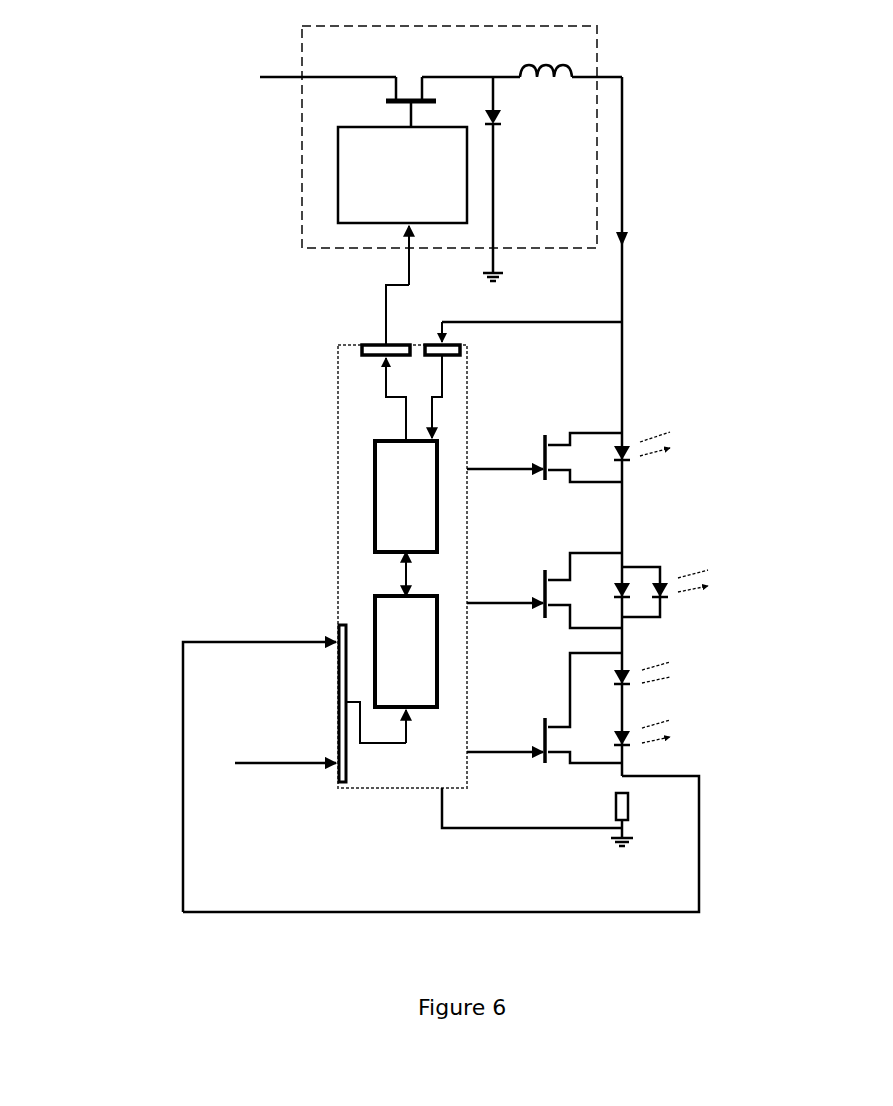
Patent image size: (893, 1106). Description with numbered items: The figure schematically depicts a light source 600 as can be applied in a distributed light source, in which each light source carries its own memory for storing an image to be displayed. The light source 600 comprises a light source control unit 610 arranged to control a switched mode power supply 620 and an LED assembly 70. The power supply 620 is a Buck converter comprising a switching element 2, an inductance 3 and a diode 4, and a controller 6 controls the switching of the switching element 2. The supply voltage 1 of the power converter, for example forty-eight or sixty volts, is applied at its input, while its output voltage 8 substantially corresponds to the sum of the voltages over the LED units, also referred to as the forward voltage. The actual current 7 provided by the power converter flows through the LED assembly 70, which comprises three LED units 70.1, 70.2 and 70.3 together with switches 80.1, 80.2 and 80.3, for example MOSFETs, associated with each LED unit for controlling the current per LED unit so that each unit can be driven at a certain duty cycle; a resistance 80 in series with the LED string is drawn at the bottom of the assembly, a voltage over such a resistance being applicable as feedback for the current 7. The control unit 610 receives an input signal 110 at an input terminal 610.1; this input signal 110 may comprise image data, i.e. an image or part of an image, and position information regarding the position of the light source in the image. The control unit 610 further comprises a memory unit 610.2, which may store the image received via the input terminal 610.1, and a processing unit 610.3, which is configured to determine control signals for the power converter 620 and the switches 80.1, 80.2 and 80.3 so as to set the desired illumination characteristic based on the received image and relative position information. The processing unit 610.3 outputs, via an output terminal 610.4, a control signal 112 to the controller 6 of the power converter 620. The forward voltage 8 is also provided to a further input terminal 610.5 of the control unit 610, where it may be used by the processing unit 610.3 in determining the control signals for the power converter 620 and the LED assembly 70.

The light source 600 is at (99, 23).
The power supply 620 is at (597, 30).
The supply voltage 1 is at (260, 77).
The switching element 2 is at (406, 82).
The inductance 3 is at (532, 62).
The diode 4 is at (500, 120).
The controller 6 is at (362, 127).
The actual current 7 is at (626, 244).
The output voltage 8 is at (624, 77).
The control signal 112 is at (384, 292).
The light source control unit 610 is at (338, 445).
The input terminal 610.1 is at (350, 766).
The memory unit 610.2 is at (395, 632).
The processing unit 610.3 is at (398, 500).
The output terminal 610.4 is at (362, 347).
The input terminal 610.5 is at (460, 347).
The input signal 110 is at (290, 758).
The LED assembly 70 is at (706, 418).
The LED unit 70.1 is at (630, 448).
The LED unit 70.2 is at (634, 565).
The LED unit 70.3 is at (636, 718).
The sense resistor 80 is at (610, 806).
The switch 80.1 is at (540, 456).
The switch 80.2 is at (540, 592).
The switch 80.3 is at (540, 745).